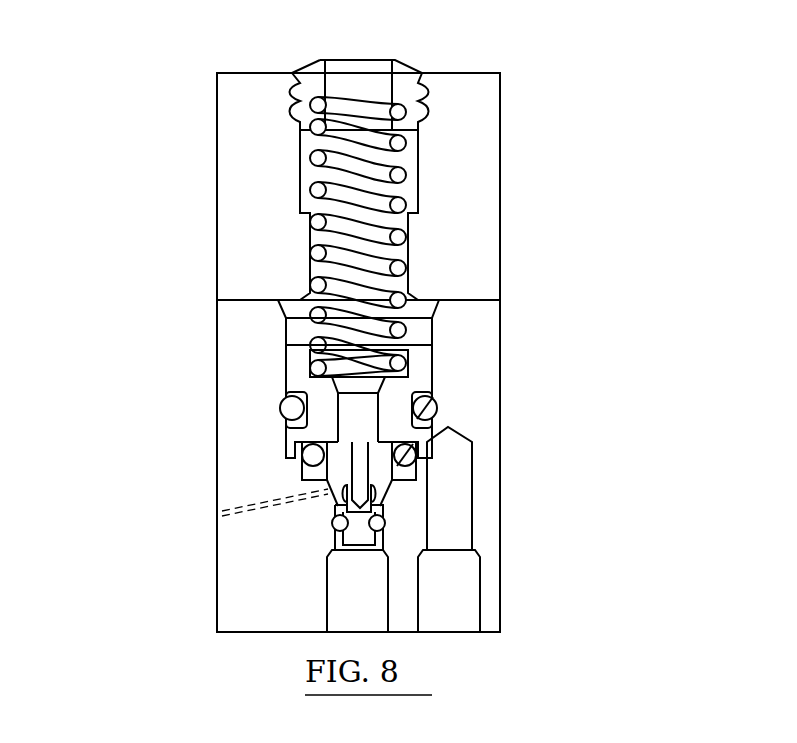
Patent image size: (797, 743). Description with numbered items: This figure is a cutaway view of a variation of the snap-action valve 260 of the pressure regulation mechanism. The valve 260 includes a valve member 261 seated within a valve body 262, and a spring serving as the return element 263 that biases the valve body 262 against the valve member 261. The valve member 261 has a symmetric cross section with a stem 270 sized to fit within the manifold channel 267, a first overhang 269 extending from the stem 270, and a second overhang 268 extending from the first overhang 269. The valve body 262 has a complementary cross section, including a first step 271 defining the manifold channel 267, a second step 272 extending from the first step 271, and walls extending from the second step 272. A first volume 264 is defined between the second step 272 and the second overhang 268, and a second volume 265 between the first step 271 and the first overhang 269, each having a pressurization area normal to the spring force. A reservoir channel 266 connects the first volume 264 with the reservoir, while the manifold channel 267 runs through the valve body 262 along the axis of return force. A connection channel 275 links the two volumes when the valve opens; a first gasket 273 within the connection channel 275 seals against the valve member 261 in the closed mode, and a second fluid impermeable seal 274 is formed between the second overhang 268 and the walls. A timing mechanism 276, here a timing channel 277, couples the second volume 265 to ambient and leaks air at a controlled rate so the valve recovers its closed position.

The valve 260 is at (556, 80).
The valve member 261 is at (320, 412).
The valve body 262 is at (230, 359).
The return element 263 is at (413, 145).
The first volume 264 is at (433, 438).
The second volume 265 is at (386, 488).
The reservoir channel 266 is at (462, 465).
The manifold channel 267 is at (335, 535).
The second overhang 268 is at (433, 395).
The first overhang 269 is at (304, 455).
The stem 270 is at (327, 490).
The first step 271 is at (417, 465).
The second step 272 is at (427, 497).
The first gasket 273 is at (313, 480).
The second fluid impermeable seal 274 is at (292, 408).
The connection channel 275 is at (427, 408).
The timing mechanism 276 is at (222, 513).
The flow path 277 is at (275, 500).